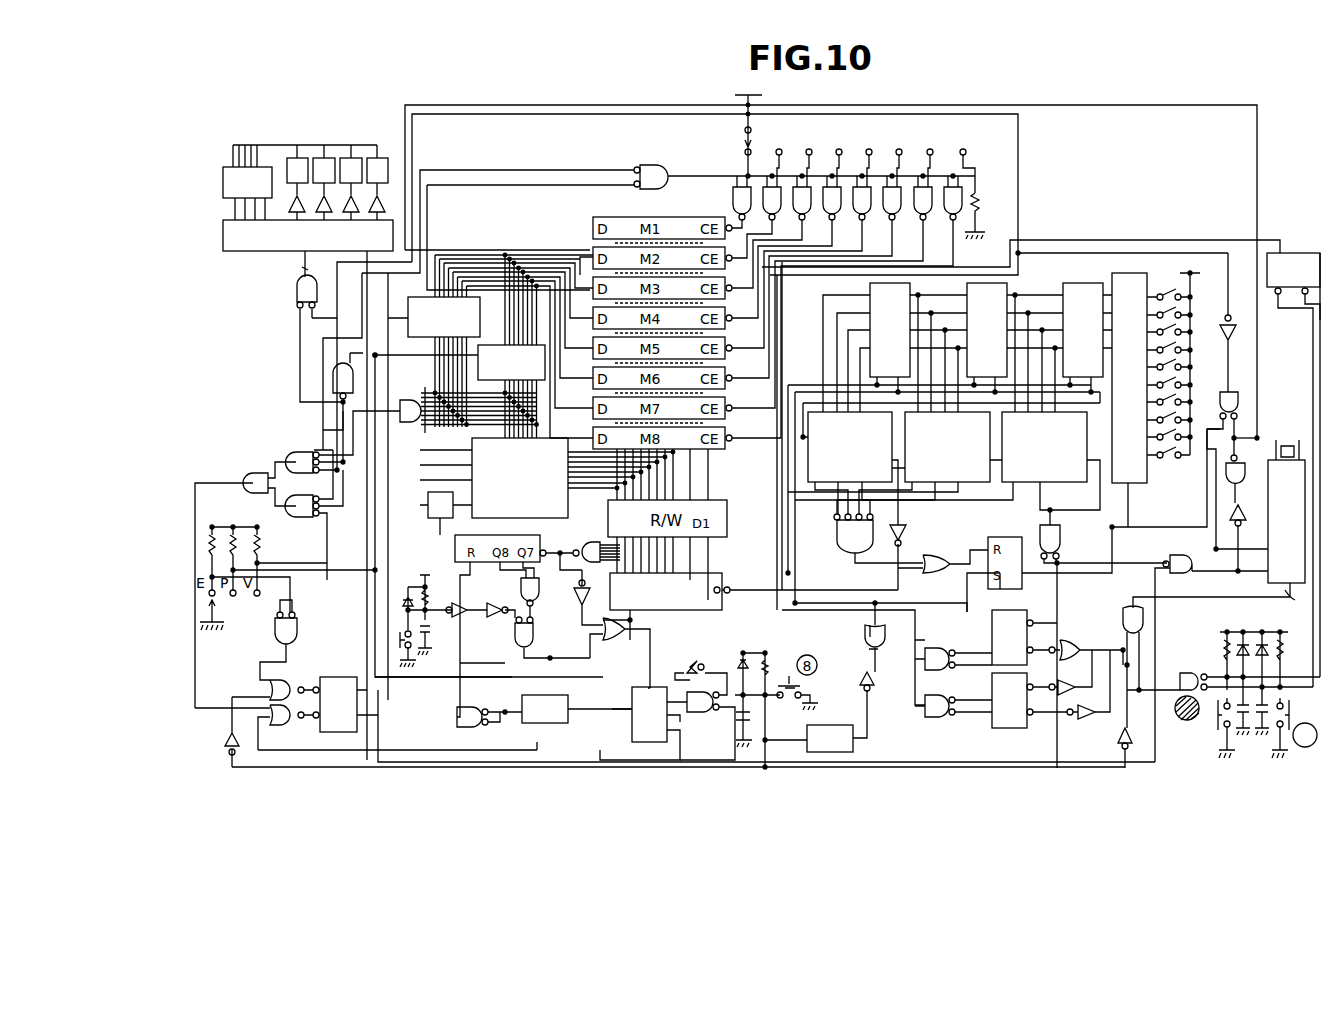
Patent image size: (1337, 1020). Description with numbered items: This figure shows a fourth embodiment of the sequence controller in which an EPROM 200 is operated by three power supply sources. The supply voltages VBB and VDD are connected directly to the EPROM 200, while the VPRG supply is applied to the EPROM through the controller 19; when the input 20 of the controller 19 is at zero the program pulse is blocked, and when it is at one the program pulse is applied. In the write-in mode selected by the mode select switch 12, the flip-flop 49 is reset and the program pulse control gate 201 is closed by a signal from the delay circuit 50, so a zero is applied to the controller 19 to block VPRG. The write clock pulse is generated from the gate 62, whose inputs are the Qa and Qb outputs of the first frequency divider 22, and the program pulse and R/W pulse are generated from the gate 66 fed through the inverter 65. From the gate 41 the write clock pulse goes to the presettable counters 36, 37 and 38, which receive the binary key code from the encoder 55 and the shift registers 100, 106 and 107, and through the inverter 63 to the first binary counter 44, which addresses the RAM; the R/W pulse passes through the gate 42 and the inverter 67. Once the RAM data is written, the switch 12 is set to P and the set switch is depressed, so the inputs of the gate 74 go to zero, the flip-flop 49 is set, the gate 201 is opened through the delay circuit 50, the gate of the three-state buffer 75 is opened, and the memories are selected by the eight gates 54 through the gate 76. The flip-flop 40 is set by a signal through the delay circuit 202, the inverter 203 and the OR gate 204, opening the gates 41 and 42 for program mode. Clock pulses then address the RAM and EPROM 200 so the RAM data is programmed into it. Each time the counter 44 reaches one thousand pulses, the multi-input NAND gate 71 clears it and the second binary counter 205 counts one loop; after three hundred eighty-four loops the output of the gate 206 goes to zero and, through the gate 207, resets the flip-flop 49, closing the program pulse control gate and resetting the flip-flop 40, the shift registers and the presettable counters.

The mode select switch 12 is at (218, 614).
The controller 19 is at (446, 505).
The input of the controller 20 is at (440, 522).
The first frequency divider 22 is at (1250, 525).
The presettable counter 36 is at (947, 468).
The presettable counter 37 is at (895, 463).
The presettable counter 38 is at (856, 468).
The flip-flop 40 is at (986, 548).
The write clock pulse control 2-input NOR gate 41 is at (1055, 535).
The R/W pulse control gate 42 is at (1227, 456).
The first binary counter 44 is at (754, 591).
The flip-flop 49 is at (630, 722).
The delay circuit 50 is at (577, 709).
The 2-input NOR gate 54 is at (735, 210).
The encoder 55 is at (1129, 378).
The gate 62 is at (1170, 557).
The inverter 63 is at (904, 535).
The inverter 65 is at (1228, 512).
The 2-input NAND gate 66 is at (1225, 471).
The inverter 67 is at (1222, 335).
The multi-input NAND gate 71 is at (592, 543).
The 2-input NOR gate 74 is at (698, 712).
The 3-state buffer 75 is at (459, 362).
The gate 76 is at (653, 165).
The shift register 100 is at (1063, 337).
The shift register 106 is at (987, 347).
The shift register 107 is at (891, 347).
The EPROM 200 is at (494, 478).
The program pulse control gate 201 is at (487, 695).
The delay circuit 202 is at (837, 721).
The inverter 203 is at (864, 680).
The 2-input OR gate 204 is at (866, 640).
The second binary counter 205 is at (461, 599).
The 2-input NAND gate 206 is at (520, 590).
The gate 207 is at (535, 636).